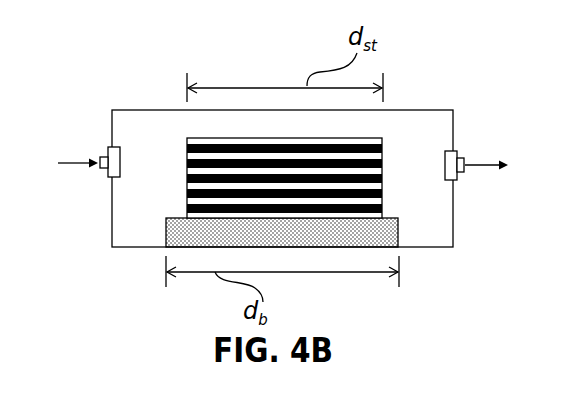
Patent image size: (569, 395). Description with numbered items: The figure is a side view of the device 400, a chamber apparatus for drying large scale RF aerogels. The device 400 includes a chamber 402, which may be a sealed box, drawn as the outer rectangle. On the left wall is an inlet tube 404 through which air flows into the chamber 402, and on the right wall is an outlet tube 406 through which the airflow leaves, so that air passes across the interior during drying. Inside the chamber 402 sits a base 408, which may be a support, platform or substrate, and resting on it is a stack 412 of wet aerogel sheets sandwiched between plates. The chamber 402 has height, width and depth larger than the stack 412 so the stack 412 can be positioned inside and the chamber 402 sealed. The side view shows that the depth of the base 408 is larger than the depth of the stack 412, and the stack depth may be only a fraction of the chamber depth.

The device 400 is at (222, 24).
The chamber 402 is at (403, 109).
The inlet tube 404 is at (102, 157).
The outlet tube 406 is at (465, 156).
The base 408 is at (390, 232).
The stack 412 is at (394, 183).